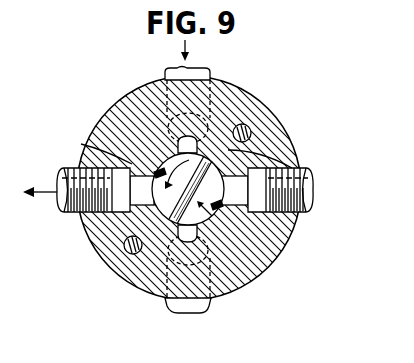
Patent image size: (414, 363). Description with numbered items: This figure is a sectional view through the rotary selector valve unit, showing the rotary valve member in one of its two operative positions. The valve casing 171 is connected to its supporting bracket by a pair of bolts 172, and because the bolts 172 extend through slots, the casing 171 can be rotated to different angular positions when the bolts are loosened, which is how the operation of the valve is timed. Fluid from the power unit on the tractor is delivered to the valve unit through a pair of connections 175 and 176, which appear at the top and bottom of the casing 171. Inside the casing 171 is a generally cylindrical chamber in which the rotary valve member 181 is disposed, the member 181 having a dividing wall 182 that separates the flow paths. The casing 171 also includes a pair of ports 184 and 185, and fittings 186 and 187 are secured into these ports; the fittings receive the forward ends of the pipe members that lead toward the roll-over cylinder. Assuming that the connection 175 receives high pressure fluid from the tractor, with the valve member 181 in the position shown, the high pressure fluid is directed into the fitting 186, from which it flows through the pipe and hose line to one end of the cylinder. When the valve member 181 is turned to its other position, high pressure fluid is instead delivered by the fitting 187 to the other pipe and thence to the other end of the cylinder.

The casing 171 is at (123, 106).
The bolts 172 is at (249, 127).
The connection 175 is at (198, 70).
The connection 176 is at (185, 306).
The rotary valve member 181 is at (237, 274).
The dividing wall 182 is at (214, 161).
The port 184 is at (95, 153).
The port 185 is at (237, 157).
The fitting 186 is at (69, 214).
The fitting 187 is at (310, 208).